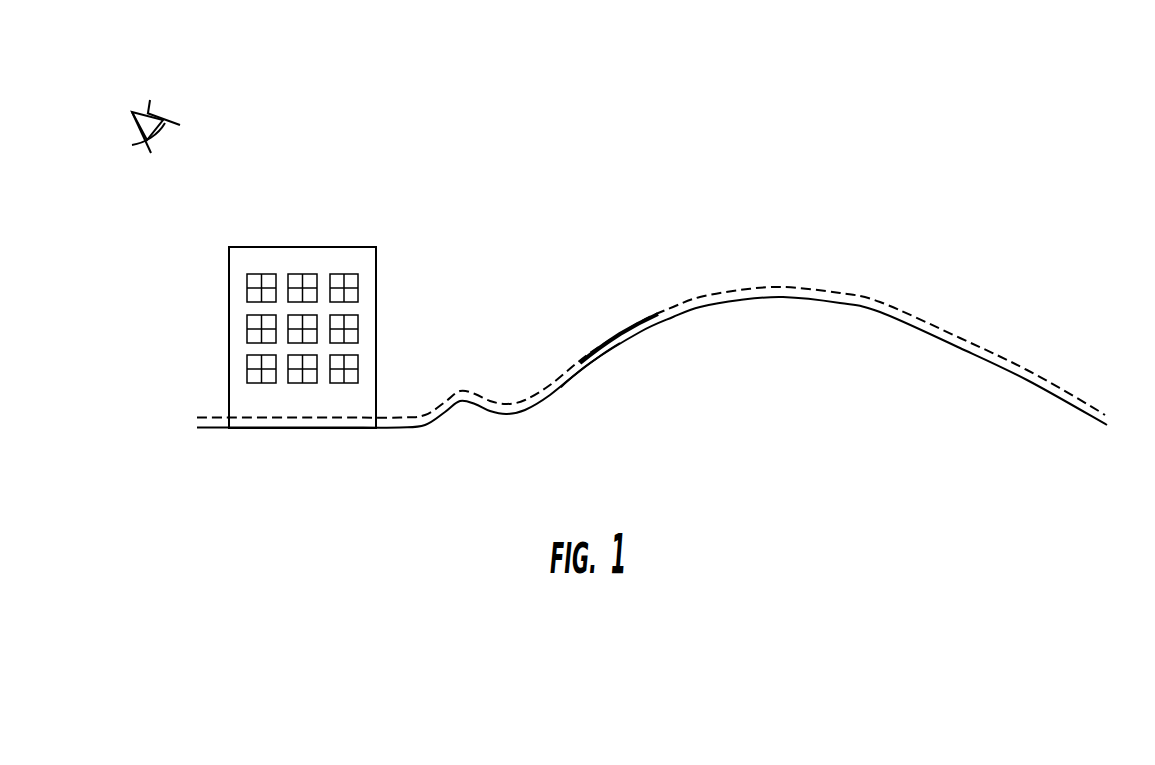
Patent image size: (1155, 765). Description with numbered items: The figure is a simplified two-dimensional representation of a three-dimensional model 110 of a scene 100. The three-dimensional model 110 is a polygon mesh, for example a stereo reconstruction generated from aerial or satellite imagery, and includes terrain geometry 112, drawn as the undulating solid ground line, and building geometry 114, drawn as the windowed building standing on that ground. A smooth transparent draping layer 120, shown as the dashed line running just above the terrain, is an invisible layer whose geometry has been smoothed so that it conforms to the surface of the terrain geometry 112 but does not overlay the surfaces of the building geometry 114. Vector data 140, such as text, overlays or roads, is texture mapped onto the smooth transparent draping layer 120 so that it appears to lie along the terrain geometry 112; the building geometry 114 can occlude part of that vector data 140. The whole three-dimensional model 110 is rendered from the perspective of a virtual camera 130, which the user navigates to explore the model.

The scene 100 is at (837, 98).
The three-dimensional model 110 is at (1090, 413).
The terrain geometry 112 is at (612, 350).
The building geometry 114 is at (367, 268).
The smooth transparent draping layer 120 is at (802, 288).
The virtual camera 130 is at (148, 108).
The vector data 140 is at (638, 322).